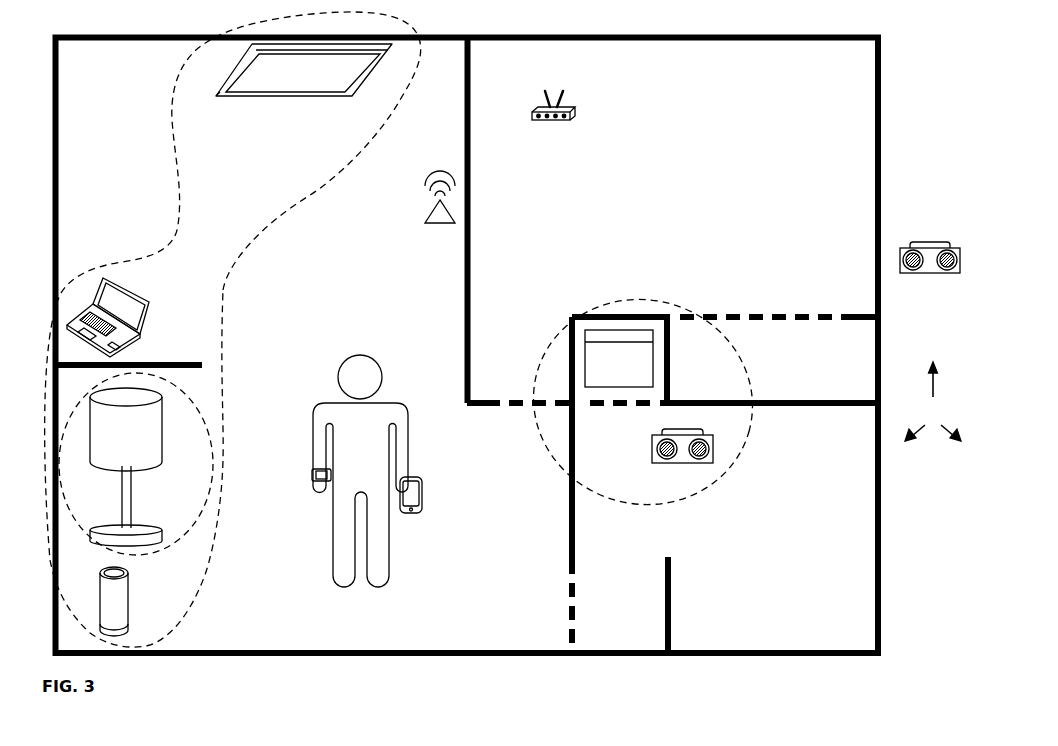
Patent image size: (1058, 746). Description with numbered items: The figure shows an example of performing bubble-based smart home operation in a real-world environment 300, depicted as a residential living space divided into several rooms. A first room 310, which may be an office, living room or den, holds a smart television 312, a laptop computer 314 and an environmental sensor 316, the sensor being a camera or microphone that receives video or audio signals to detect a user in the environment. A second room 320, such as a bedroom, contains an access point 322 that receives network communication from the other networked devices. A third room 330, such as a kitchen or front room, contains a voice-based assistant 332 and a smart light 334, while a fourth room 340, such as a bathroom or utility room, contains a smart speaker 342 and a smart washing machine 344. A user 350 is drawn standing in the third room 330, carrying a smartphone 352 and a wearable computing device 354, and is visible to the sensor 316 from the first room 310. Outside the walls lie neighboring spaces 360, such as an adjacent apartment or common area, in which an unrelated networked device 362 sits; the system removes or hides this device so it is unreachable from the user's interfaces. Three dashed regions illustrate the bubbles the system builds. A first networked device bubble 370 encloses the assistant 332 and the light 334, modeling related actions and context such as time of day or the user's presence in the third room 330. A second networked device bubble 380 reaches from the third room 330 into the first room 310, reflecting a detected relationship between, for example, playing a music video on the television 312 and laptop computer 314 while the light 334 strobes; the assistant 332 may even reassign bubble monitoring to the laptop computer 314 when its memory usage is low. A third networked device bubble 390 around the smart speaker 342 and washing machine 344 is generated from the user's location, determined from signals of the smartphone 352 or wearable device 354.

The real-world environment 300 is at (76, 49).
The first room 310 is at (299, 258).
The smart television 312 is at (300, 83).
The laptop computer 314 is at (125, 310).
The environmental sensor 316 is at (440, 216).
The second room 320 is at (669, 190).
The access point 322 is at (576, 111).
The third room 330 is at (279, 630).
The voice-based assistant 332 is at (113, 598).
The smart light 334 is at (111, 433).
The fourth room 340 is at (728, 530).
The smart speaker 342 is at (683, 461).
The smart washing machine 344 is at (604, 375).
The user 350 is at (348, 448).
The smartphone 352 is at (422, 490).
The wearable computing device 354 is at (312, 472).
The neighboring spaces 360 is at (933, 401).
The unrelated networked device 362 is at (932, 275).
The first networked device bubble 370 is at (213, 520).
The second networked device bubble 380 is at (303, 200).
The third networked device bubble 390 is at (748, 462).